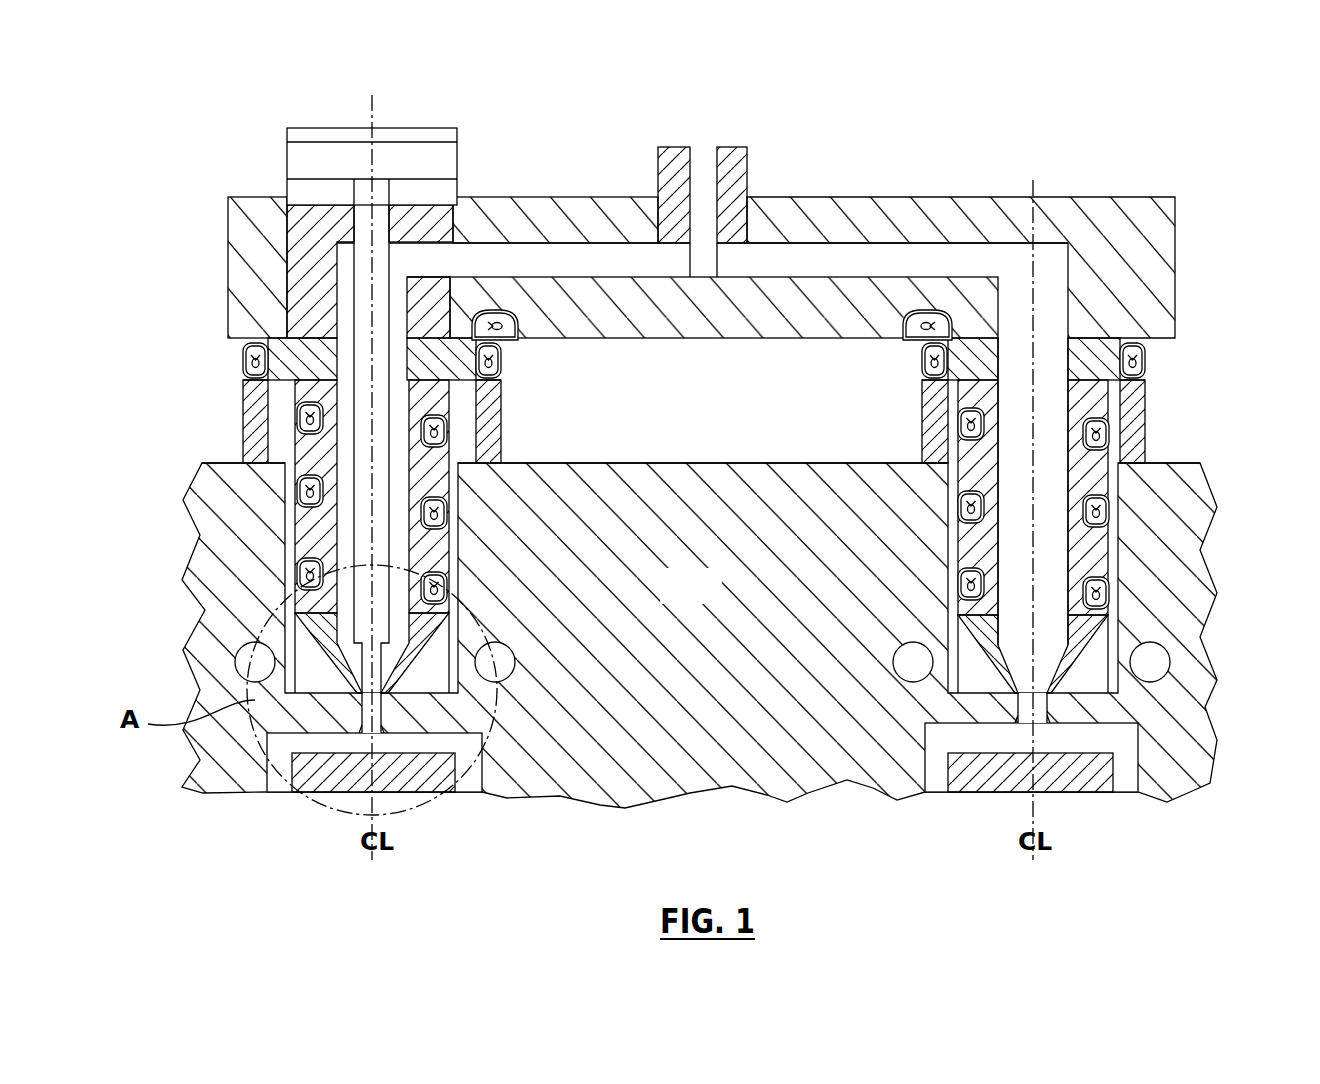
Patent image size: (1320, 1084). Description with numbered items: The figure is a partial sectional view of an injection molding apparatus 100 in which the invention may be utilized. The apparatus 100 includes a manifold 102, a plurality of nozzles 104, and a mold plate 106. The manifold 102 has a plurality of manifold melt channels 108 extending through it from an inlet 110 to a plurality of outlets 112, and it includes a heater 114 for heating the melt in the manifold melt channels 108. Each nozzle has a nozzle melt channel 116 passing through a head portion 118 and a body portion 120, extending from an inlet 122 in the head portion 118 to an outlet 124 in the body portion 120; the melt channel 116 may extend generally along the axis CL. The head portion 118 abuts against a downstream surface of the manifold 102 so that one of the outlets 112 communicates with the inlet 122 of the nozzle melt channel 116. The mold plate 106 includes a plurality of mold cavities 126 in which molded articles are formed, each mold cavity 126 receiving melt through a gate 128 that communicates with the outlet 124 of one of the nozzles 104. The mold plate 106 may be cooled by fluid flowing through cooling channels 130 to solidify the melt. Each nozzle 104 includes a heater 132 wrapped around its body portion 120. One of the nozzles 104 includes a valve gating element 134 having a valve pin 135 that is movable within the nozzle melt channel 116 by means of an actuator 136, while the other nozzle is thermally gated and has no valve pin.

The injection molding apparatus 100 is at (1126, 123).
The manifold 102 is at (1135, 197).
The nozzles 104 is at (470, 440).
The mold plate 106 is at (712, 598).
The manifold melt channels 108 is at (843, 262).
The inlet 110 is at (702, 146).
The outlets 112 is at (243, 352).
The heater 114 is at (520, 326).
The nozzle melt channel 116 is at (397, 487).
The head portion 118 is at (243, 402).
The body portion 120 is at (307, 447).
The inlet 122 is at (1013, 337).
The outlet 124 is at (362, 690).
The mold cavities 126 is at (483, 790).
The gate 128 is at (380, 690).
The cooling channels 130 is at (500, 660).
The heater 132 is at (305, 573).
The valve gating element 134 is at (364, 151).
The valve pin 135 is at (390, 545).
The actuator 136 is at (458, 160).